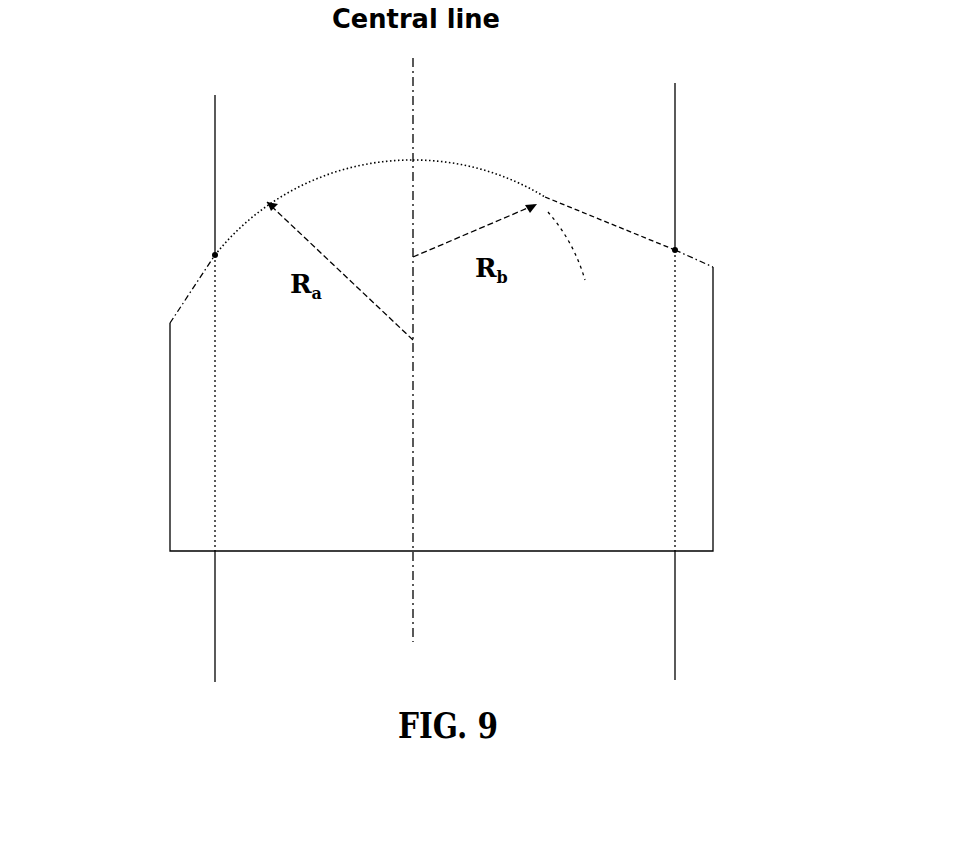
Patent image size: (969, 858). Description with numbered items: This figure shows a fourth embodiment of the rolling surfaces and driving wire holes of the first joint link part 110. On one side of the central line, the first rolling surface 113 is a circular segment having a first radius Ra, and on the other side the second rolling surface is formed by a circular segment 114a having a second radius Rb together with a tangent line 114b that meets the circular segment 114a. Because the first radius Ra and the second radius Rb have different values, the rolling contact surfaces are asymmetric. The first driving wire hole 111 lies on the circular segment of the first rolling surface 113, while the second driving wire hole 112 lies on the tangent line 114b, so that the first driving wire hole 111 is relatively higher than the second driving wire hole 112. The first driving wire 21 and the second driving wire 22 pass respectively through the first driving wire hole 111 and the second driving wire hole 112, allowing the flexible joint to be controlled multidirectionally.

The first joint link part 110 is at (713, 387).
The first driving wire hole 111 is at (215, 255).
The second driving wire hole 112 is at (675, 250).
The first rolling surface 113 is at (382, 161).
The circular segment of second rolling surface 114a is at (433, 159).
The tangent line of second rolling surface 114b is at (545, 193).
The first driving wire 21 is at (215, 398).
The second driving wire 22 is at (675, 482).